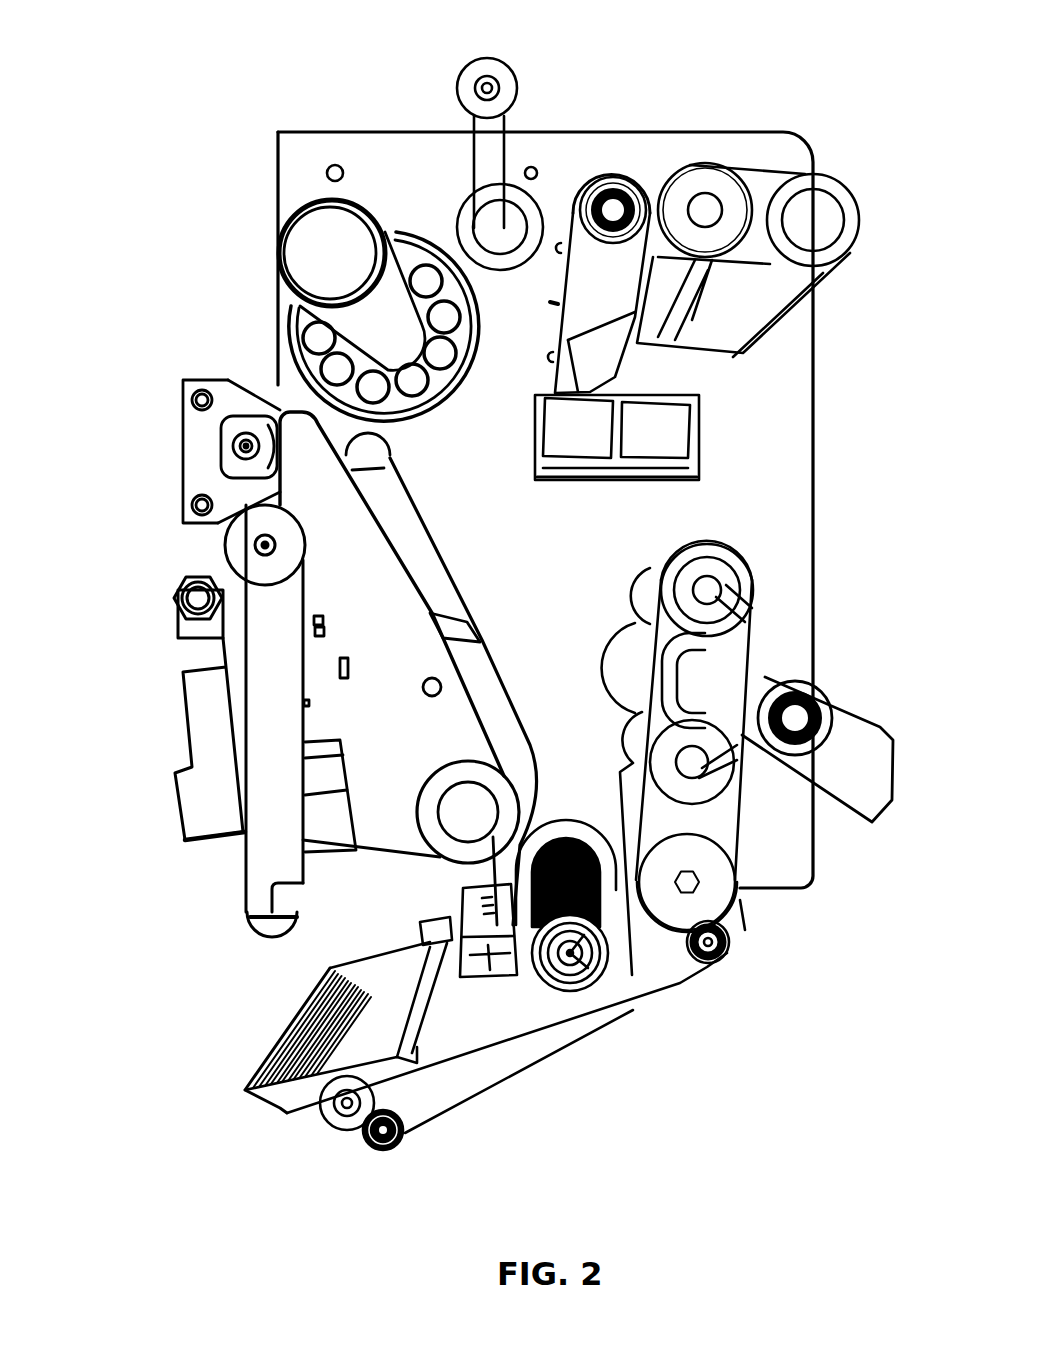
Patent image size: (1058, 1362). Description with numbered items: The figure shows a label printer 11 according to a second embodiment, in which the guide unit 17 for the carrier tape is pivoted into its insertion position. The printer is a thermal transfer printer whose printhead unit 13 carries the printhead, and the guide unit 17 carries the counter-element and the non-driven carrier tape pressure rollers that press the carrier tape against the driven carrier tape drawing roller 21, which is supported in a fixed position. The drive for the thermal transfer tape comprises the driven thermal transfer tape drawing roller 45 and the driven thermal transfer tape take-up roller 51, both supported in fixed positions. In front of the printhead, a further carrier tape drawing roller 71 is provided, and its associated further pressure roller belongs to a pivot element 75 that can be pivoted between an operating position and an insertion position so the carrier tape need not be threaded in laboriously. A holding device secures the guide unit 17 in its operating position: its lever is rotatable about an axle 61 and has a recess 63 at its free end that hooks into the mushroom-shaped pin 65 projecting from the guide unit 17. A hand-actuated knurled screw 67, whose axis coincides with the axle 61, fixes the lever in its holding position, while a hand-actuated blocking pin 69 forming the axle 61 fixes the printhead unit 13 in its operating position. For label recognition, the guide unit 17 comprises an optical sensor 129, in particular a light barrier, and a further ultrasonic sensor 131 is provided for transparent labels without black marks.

The label printer 11 is at (170, 185).
The thermal transfer tape take-up roller 51 is at (315, 232).
The further carrier tape drawing roller 71 is at (613, 210).
The pivot element 75 is at (766, 182).
The sensor 129 is at (670, 440).
The thermal transfer tape drawing roller 45 is at (242, 422).
The printhead unit 13 is at (495, 625).
The knurled screw 67 is at (227, 527).
The axle 61 is at (240, 543).
The blocking pin 69 is at (240, 543).
The recess 63 is at (297, 903).
The further sensor 131 is at (487, 965).
The mushroom-shaped pin 65 is at (340, 1097).
The guide unit 17 is at (717, 1018).
The carrier tape drawing roller 21 is at (767, 670).